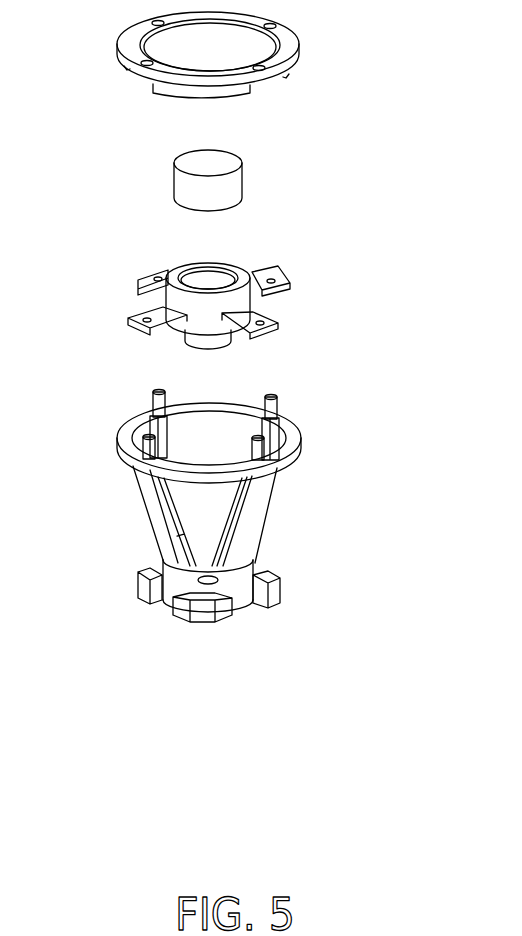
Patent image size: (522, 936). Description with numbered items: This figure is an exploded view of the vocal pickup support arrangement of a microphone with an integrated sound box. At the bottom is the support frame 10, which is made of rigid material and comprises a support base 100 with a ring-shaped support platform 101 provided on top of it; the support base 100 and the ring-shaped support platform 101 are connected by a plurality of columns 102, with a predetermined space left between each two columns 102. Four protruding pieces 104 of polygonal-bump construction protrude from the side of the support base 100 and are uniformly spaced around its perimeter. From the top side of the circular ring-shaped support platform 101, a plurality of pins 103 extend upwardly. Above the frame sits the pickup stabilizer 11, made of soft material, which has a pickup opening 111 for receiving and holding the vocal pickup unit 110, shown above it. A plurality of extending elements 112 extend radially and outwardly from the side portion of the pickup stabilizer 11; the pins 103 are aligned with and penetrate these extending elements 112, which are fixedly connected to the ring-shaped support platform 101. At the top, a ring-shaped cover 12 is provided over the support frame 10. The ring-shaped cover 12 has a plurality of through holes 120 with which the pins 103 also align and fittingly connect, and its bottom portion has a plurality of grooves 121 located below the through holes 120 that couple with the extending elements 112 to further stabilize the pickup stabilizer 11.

The support frame 10 is at (220, 520).
The support base 100 is at (240, 595).
The ring-shaped support platform 101 is at (293, 438).
The columns 102 is at (253, 517).
The pins 103 is at (157, 405).
The protruding pieces 104 is at (147, 577).
The pickup stabilizer 11 is at (225, 274).
The vocal pickup unit 110 is at (224, 193).
The pickup opening 111 is at (213, 280).
The extending elements 112 is at (287, 283).
The ring-shaped cover 12 is at (221, 62).
The through holes 120 is at (143, 63).
The grooves 121 is at (268, 87).